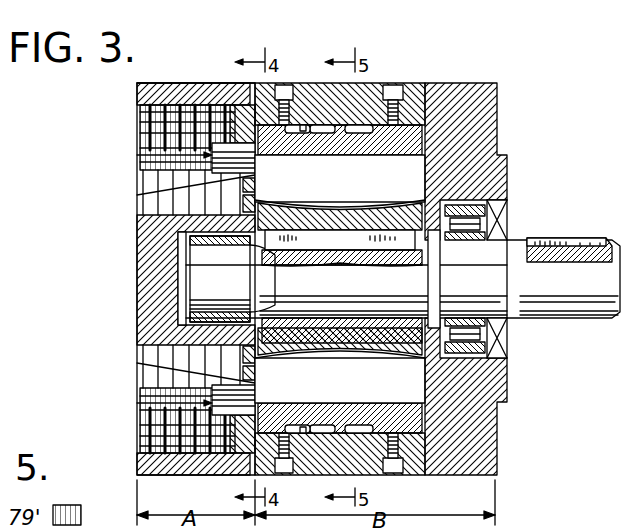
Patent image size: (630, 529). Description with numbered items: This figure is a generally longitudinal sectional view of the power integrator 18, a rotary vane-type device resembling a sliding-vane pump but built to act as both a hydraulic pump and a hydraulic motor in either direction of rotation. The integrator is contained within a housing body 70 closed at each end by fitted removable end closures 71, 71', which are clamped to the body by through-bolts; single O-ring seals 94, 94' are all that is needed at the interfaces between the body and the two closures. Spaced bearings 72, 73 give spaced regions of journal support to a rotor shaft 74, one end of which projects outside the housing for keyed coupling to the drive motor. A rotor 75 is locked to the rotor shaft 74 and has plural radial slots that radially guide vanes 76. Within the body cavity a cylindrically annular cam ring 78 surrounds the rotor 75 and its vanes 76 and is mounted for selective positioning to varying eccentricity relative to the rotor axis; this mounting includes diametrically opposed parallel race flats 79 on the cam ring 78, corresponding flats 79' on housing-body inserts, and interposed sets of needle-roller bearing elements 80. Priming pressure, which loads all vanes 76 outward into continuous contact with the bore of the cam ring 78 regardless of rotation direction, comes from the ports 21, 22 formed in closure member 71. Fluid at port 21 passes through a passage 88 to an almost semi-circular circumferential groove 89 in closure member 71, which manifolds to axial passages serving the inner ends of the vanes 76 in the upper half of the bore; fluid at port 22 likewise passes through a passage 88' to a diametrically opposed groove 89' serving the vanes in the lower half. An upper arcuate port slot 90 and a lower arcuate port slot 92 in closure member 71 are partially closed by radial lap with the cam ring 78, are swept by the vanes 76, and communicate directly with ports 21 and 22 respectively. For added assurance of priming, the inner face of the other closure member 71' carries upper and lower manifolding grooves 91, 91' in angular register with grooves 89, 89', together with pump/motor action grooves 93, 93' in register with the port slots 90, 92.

The power integrator 18 is at (133, 89).
The port 21 is at (140, 119).
The port 22 is at (140, 378).
The housing body 70 is at (398, 82).
The end closure 71 is at (196, 63).
The end closure 71' is at (468, 257).
The bearing 72 is at (236, 318).
The bearing 73 is at (500, 228).
The rotor shaft 74 is at (403, 290).
The rotor 75 is at (288, 330).
The vanes 76 is at (340, 200).
The cam ring 78 is at (355, 133).
The race flats 79 is at (340, 279).
The flats 79' is at (308, 278).
The needle-roller bearing elements 80 is at (322, 133).
The passage 88 is at (172, 194).
The passage 88' is at (274, 383).
The circumferential groove 89 is at (172, 211).
The circumferential groove 89' is at (275, 362).
The upper arcuate port slot 90 is at (212, 160).
The manifolding groove 91 is at (341, 206).
The manifolding groove 91' is at (404, 352).
The lower arcuate port slot 92 is at (212, 398).
The pump/motor action groove 93 is at (343, 154).
The pump/motor action groove 93' is at (404, 405).
The O-ring seal 94 is at (238, 286).
The O-ring seal 94' is at (428, 282).